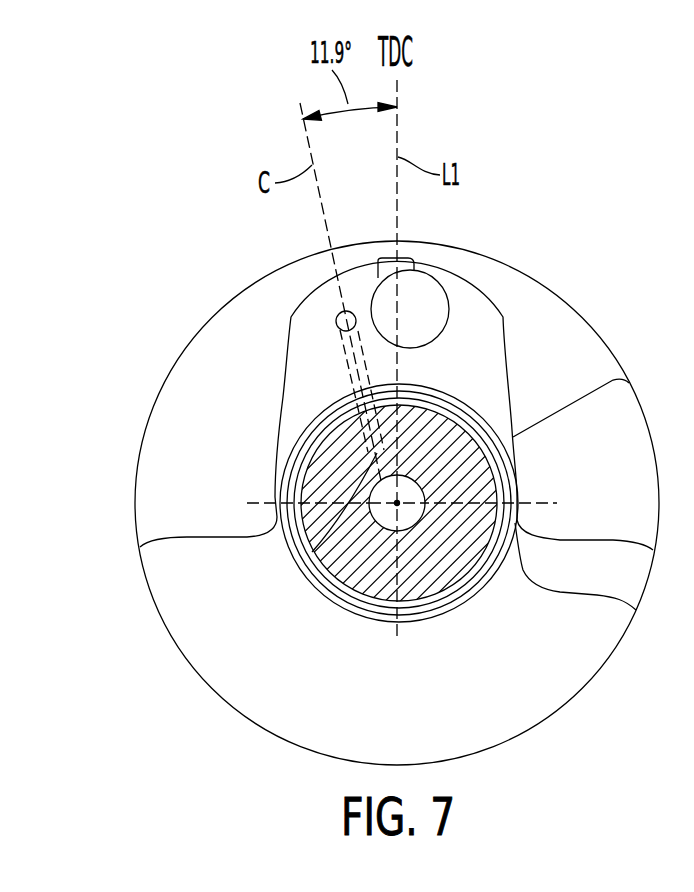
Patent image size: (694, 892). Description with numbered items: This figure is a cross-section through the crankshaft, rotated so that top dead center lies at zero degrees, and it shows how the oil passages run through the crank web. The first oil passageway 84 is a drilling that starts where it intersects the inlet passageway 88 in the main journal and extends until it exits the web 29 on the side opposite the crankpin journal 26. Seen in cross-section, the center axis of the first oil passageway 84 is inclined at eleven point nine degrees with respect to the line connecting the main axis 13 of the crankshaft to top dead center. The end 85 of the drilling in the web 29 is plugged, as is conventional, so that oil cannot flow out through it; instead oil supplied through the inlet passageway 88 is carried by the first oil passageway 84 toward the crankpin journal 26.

The main axis 13 is at (397, 503).
The crankpin journal 26 is at (495, 489).
The web 29 is at (483, 314).
The first oil passageway 84 is at (342, 348).
The end of the drilling 85 is at (337, 316).
The inlet passageway 88 is at (312, 552).